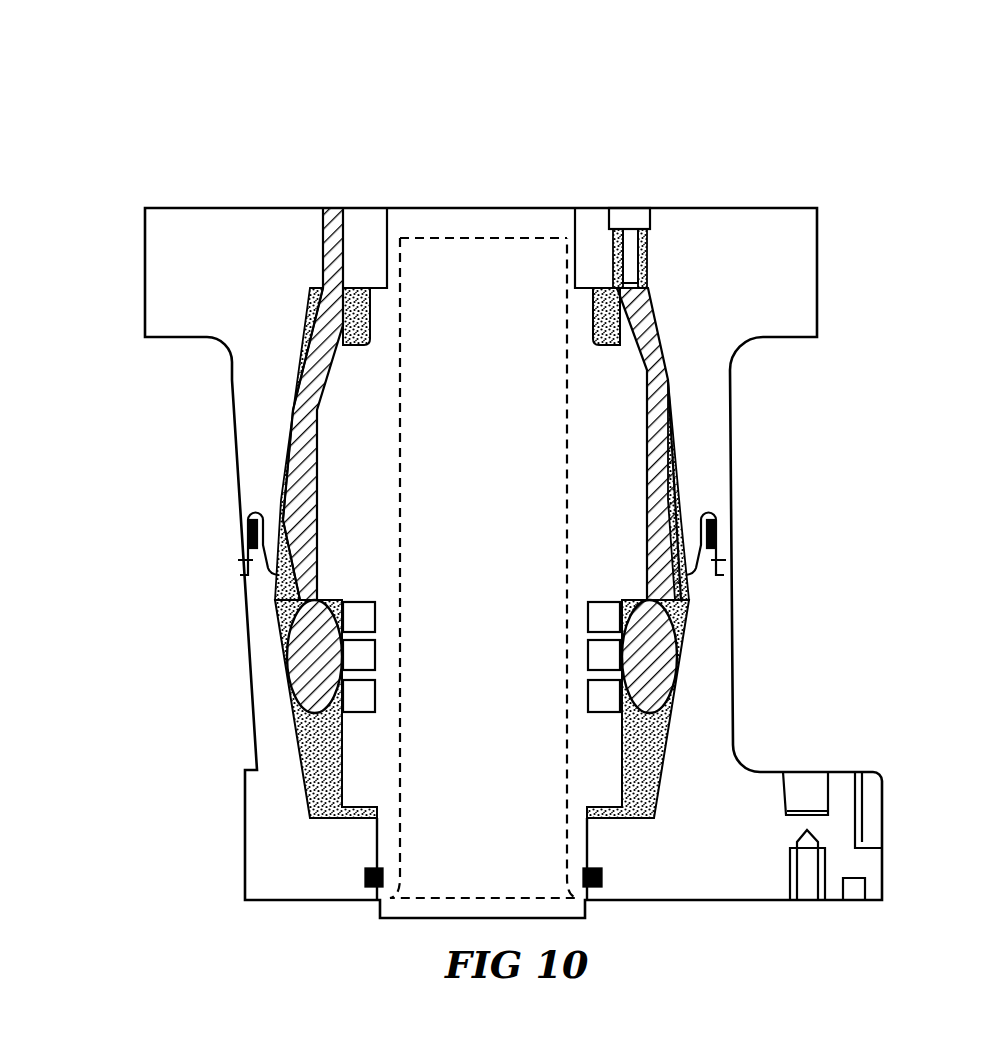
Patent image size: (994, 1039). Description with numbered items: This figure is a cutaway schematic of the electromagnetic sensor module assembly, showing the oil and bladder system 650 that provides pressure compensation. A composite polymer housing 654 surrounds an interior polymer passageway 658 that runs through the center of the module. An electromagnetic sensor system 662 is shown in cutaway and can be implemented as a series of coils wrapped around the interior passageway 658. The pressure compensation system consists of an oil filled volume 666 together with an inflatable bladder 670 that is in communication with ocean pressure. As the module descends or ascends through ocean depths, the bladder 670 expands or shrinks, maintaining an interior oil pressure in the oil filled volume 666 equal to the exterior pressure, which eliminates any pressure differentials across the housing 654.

The oil and bladder system 650 is at (185, 127).
The composite polymer housing 654 is at (145, 290).
The interior polymer passageway 658 is at (440, 785).
The electromagnetic sensor system 662 is at (376, 652).
The oil filled volume 666 is at (280, 596).
The inflatable bladder 670 is at (293, 678).